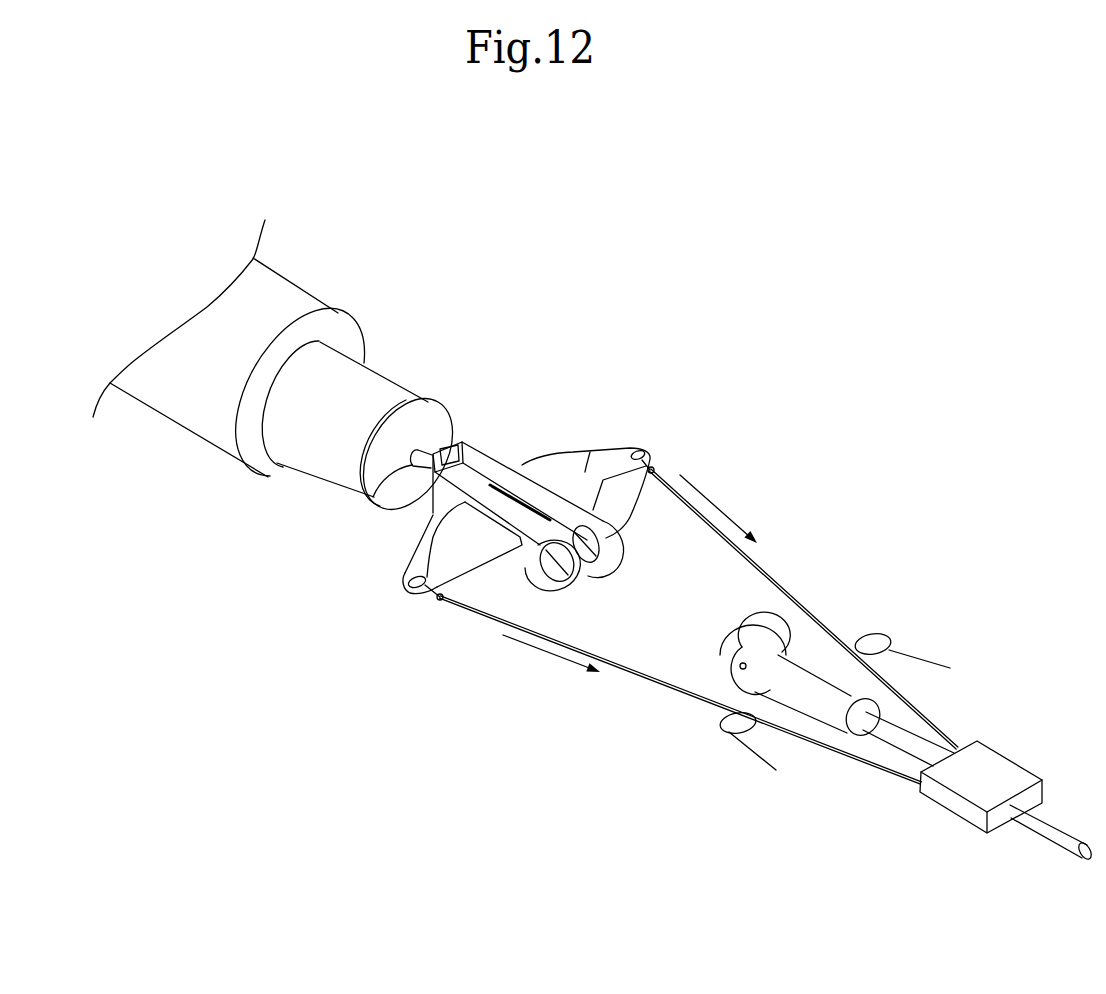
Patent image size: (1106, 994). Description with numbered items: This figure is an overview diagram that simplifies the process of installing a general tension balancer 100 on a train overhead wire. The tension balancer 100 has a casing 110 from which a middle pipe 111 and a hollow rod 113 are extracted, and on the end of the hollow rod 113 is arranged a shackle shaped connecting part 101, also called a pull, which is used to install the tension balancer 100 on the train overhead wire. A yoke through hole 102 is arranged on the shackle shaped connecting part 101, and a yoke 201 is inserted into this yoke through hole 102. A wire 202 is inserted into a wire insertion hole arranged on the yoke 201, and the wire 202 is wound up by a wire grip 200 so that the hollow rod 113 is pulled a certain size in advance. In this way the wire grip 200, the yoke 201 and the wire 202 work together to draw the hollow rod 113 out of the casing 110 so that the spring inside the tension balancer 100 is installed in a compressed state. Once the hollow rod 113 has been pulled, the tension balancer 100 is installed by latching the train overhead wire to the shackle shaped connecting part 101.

The tension balancer 100 is at (302, 253).
The casing 110 is at (302, 302).
The middle pipe 111 is at (377, 370).
The hollow rod 113 is at (373, 495).
The shackle shaped connecting part 101 is at (650, 470).
The yoke through hole 102 is at (430, 588).
The wire grip 200 is at (932, 627).
The yoke 201 is at (585, 470).
The wire 202 is at (925, 709).